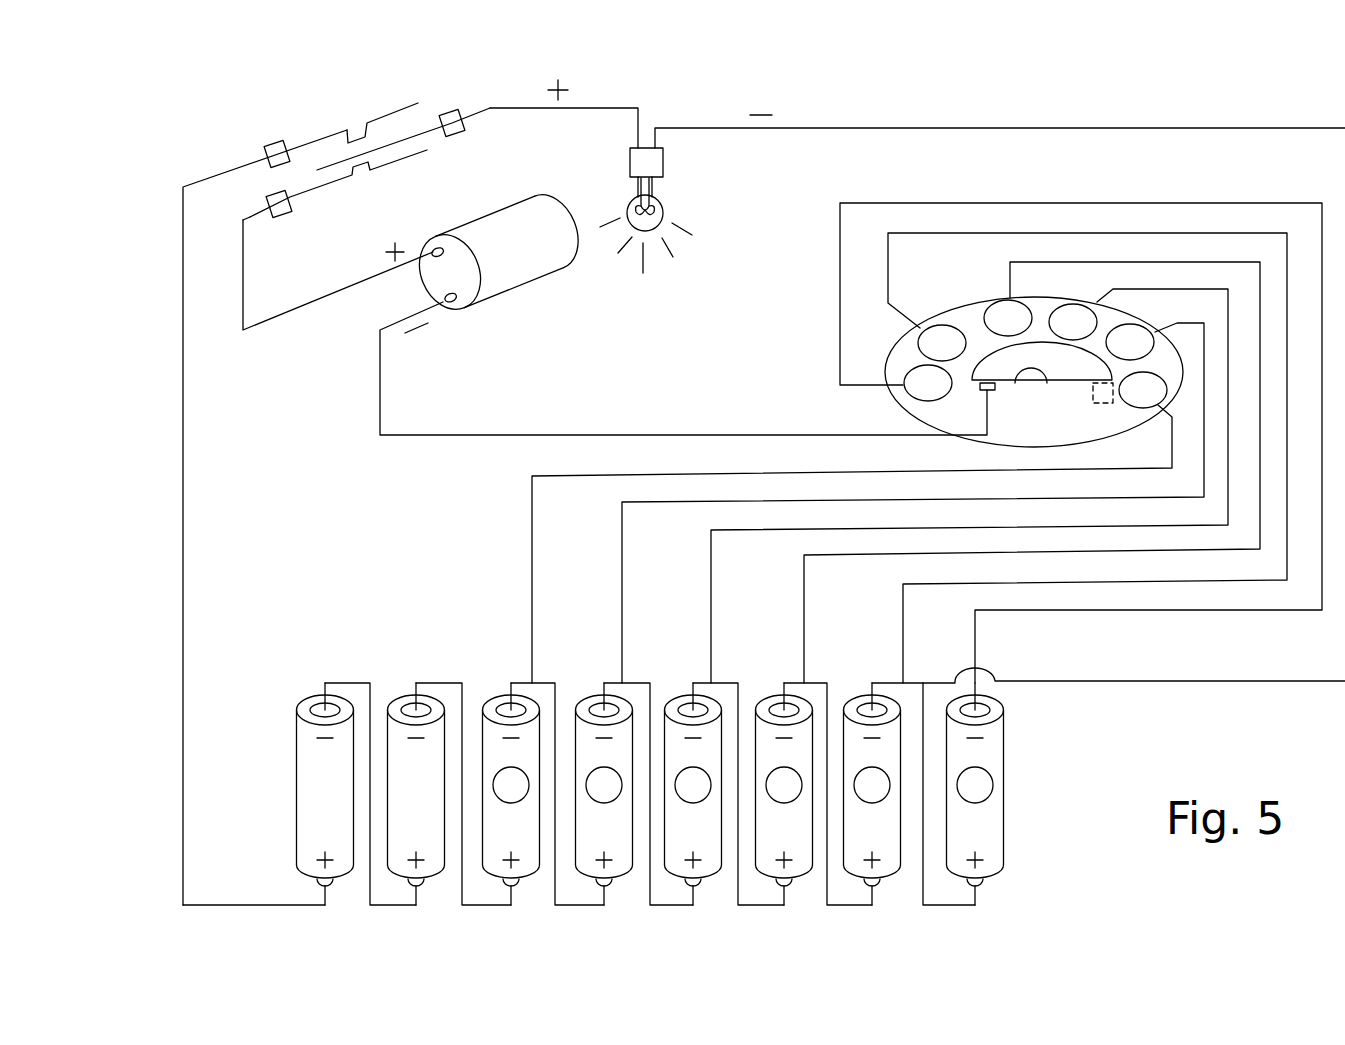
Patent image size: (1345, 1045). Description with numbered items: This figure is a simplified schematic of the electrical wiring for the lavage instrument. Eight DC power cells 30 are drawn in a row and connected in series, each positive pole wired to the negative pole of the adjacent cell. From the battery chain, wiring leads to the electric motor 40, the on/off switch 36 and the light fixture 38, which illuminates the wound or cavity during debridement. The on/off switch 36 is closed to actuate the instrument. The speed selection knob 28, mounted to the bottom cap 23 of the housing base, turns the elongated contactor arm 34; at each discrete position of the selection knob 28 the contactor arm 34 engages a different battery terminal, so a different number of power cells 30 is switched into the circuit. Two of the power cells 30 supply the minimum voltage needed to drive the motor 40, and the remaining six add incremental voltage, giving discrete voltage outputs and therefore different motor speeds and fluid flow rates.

The bottom cap 23 is at (1040, 313).
The speed selection knob 28 is at (1000, 360).
The power cells 30 is at (343, 730).
The contactor arm 34 is at (1100, 405).
The on/off switch 36 is at (318, 160).
The light fixture 38 is at (662, 198).
The electric motor 40 is at (508, 263).